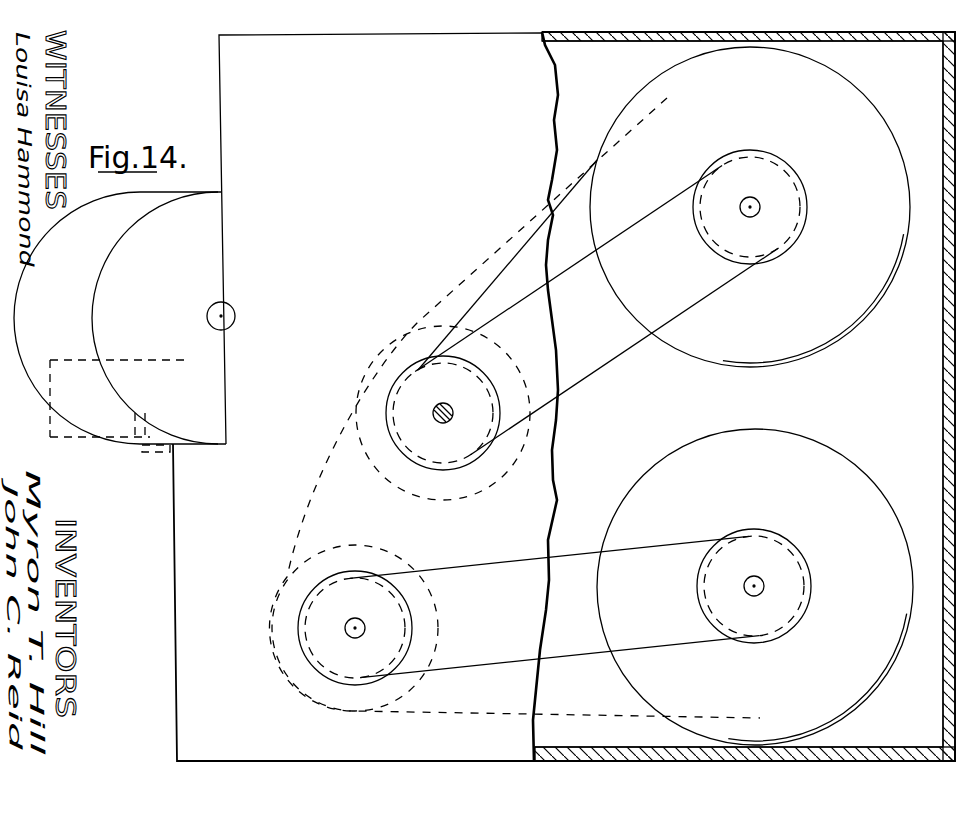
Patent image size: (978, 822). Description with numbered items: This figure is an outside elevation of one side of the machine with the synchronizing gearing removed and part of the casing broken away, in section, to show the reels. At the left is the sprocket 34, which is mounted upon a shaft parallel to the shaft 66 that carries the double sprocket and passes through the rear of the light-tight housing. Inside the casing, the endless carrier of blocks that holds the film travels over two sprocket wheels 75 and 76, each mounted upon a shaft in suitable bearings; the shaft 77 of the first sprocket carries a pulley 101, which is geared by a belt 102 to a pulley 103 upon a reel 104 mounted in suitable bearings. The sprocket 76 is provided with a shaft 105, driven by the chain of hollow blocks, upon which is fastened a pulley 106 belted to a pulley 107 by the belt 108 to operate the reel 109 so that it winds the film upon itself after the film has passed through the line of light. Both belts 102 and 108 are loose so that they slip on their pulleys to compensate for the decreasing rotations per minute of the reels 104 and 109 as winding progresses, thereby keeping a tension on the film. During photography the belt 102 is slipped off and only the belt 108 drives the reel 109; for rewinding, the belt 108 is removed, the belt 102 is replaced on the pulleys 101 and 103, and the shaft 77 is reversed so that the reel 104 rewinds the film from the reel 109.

The sprocket 34 is at (120, 322).
The shaft 66 is at (235, 316).
The shaft 77 is at (433, 413).
The pulley 101 is at (447, 469).
The sprocket wheel 75 is at (441, 500).
The belt 102 is at (596, 372).
The pulley 103 is at (790, 247).
The reel 104 is at (820, 350).
The shaft 105 is at (362, 609).
The pulley 106 is at (413, 630).
The sprocket wheel 76 is at (399, 557).
The belt 108 is at (683, 644).
The pulley 107 is at (808, 572).
The reel 109 is at (872, 690).